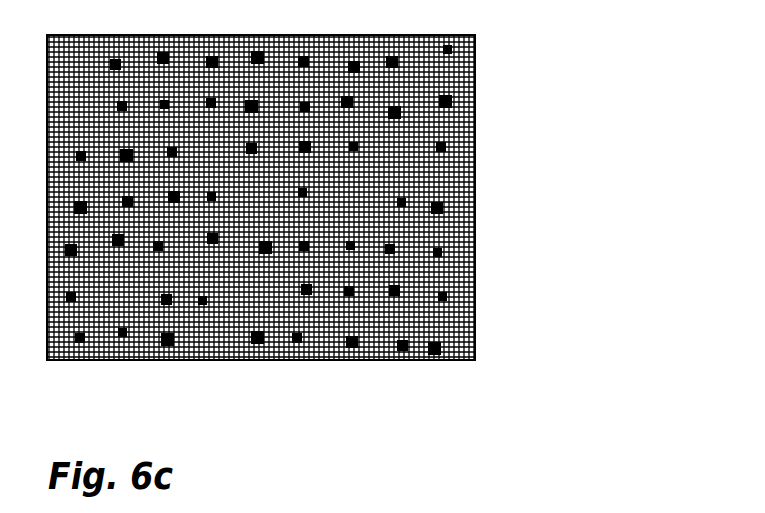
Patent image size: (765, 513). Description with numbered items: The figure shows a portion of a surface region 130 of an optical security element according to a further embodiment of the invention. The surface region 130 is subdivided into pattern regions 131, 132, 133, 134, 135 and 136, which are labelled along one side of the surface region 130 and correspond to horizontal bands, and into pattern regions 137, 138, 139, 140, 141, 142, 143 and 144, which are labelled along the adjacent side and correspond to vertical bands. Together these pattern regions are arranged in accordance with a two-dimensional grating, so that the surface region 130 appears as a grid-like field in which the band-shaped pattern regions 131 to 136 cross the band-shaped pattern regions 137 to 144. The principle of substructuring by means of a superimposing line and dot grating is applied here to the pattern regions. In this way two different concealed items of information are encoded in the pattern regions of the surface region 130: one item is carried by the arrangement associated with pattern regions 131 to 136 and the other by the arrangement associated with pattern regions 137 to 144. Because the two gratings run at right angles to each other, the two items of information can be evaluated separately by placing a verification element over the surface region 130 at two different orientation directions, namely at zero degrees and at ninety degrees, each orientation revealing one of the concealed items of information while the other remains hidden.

The surface region 130 is at (425, 17).
The pattern region 131 is at (478, 47).
The pattern region 132 is at (478, 104).
The pattern region 133 is at (478, 157).
The pattern region 134 is at (478, 204).
The pattern region 135 is at (478, 256).
The pattern region 136 is at (478, 316).
The pattern region 137 is at (72, 353).
The pattern region 138 is at (133, 353).
The pattern region 139 is at (188, 353).
The pattern region 140 is at (228, 353).
The pattern region 141 is at (280, 353).
The pattern region 142 is at (322, 355).
The pattern region 143 is at (387, 355).
The pattern region 144 is at (425, 355).